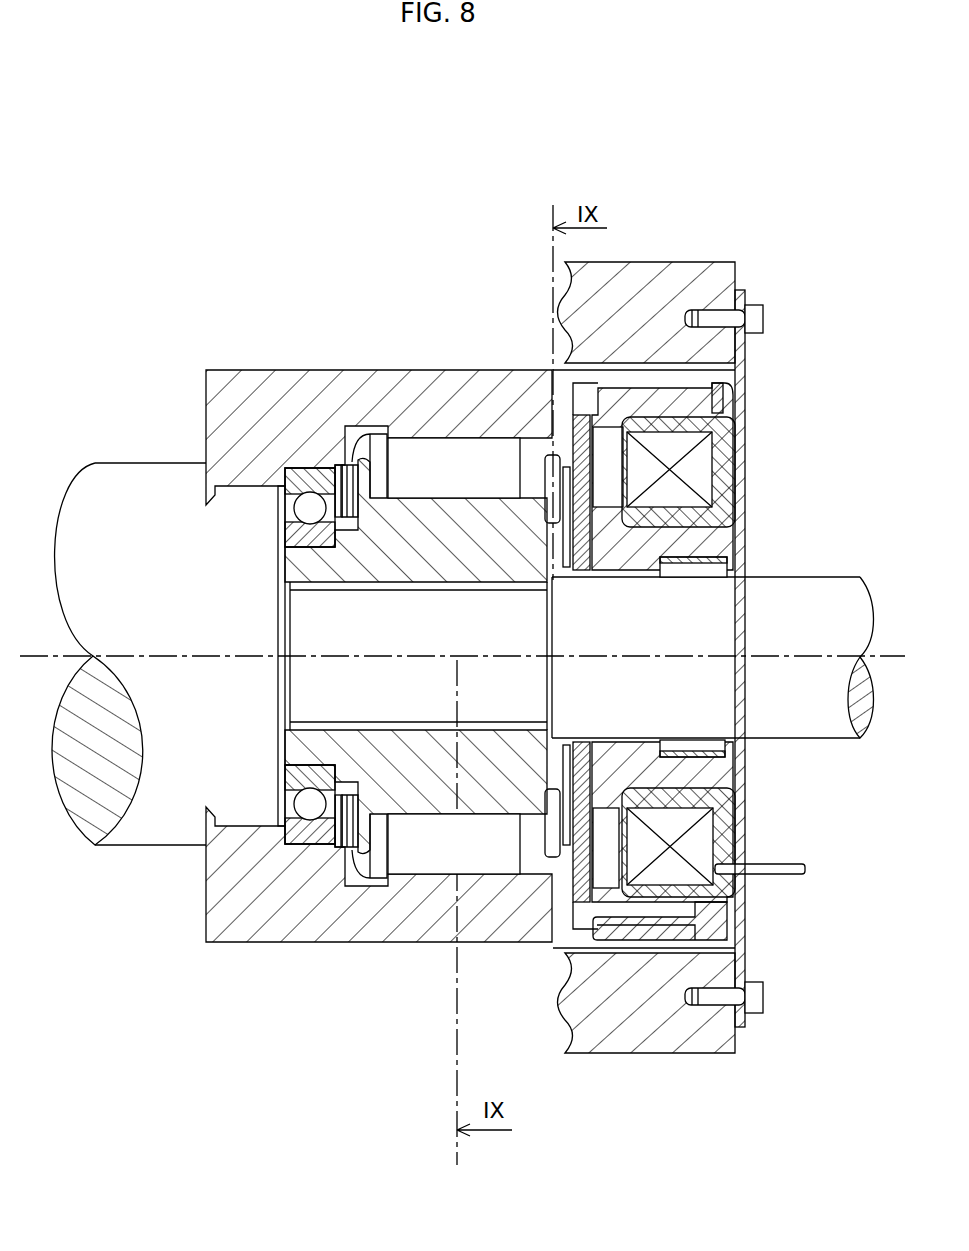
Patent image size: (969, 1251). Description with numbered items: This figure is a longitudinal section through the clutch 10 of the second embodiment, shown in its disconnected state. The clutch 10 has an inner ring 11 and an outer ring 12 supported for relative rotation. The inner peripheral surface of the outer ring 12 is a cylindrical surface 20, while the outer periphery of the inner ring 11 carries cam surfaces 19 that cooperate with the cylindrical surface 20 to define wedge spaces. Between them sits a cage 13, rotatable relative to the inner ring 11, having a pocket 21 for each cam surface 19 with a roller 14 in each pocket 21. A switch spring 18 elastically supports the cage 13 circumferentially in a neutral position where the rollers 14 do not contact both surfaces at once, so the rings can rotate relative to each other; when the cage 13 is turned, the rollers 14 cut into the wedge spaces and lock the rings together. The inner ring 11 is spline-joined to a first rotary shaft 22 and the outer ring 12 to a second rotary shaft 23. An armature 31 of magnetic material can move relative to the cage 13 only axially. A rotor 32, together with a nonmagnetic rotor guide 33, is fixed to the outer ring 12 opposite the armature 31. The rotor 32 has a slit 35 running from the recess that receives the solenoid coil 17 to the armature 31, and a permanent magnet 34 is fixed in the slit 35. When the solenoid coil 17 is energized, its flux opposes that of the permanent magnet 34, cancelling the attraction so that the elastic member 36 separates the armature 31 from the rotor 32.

The clutch 10 is at (405, 252).
The inner ring 11 is at (345, 875).
The outer ring 12 is at (240, 400).
The cage 13 is at (335, 468).
The roller 14 is at (430, 855).
The solenoid coil 17 is at (688, 853).
The switch spring 18 is at (548, 450).
The cam surfaces 19 is at (365, 455).
The cylindrical surface 20 is at (400, 440).
The pocket 21 is at (385, 770).
The first rotary shaft 22 is at (765, 610).
The second rotary shaft 23 is at (158, 518).
The armature 31 is at (575, 420).
The rotor 32 is at (670, 515).
The rotor guide 33 is at (628, 385).
The permanent magnet 34 is at (607, 832).
The slit 35 is at (713, 385).
The elastic member 36 is at (600, 765).